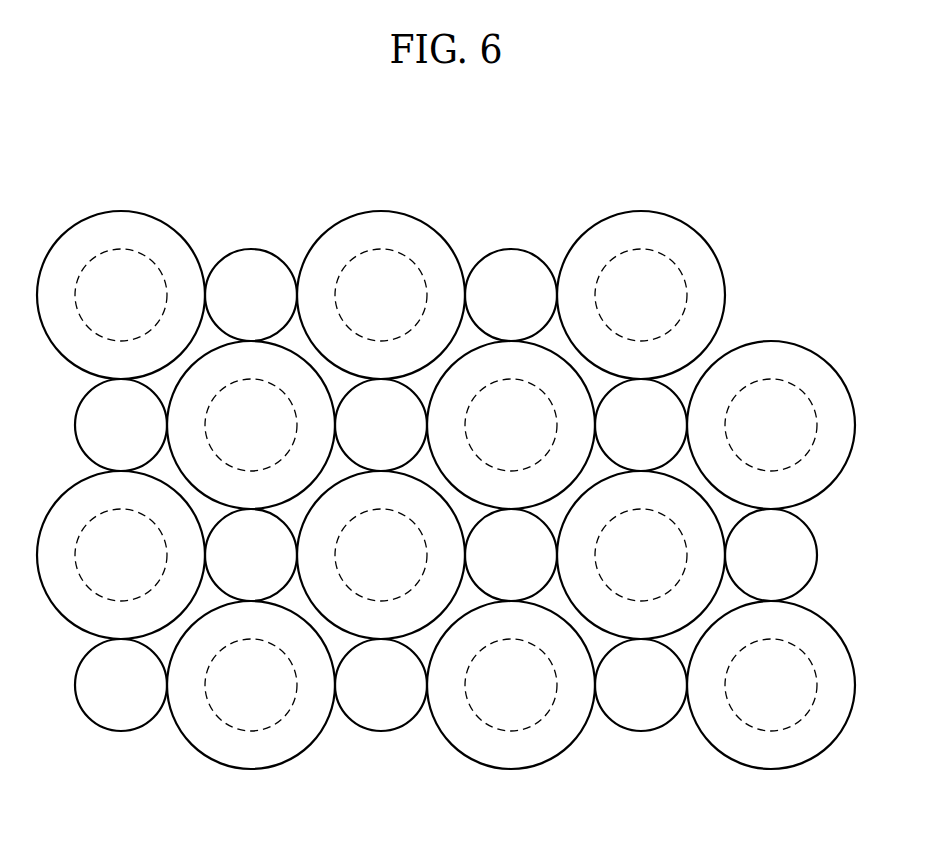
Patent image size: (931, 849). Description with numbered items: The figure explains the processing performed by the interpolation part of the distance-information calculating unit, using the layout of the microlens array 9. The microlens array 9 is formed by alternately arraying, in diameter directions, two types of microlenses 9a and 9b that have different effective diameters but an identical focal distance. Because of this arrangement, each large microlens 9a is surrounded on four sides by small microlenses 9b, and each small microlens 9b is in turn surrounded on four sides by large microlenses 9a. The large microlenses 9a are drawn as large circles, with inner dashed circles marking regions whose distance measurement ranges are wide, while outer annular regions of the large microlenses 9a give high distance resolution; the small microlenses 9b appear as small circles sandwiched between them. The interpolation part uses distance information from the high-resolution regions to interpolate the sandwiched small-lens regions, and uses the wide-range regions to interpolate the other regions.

The microlens array 9 is at (760, 250).
The large microlens 9a is at (175, 228).
The small microlens 9b is at (263, 250).